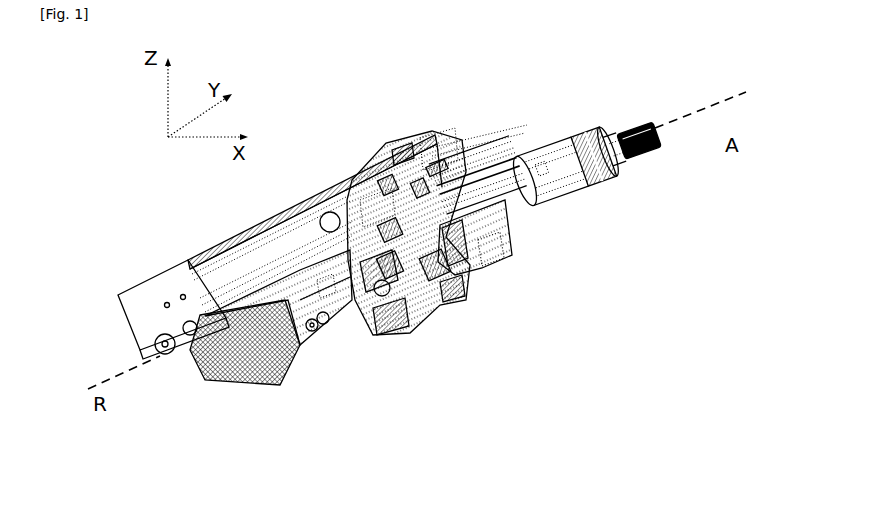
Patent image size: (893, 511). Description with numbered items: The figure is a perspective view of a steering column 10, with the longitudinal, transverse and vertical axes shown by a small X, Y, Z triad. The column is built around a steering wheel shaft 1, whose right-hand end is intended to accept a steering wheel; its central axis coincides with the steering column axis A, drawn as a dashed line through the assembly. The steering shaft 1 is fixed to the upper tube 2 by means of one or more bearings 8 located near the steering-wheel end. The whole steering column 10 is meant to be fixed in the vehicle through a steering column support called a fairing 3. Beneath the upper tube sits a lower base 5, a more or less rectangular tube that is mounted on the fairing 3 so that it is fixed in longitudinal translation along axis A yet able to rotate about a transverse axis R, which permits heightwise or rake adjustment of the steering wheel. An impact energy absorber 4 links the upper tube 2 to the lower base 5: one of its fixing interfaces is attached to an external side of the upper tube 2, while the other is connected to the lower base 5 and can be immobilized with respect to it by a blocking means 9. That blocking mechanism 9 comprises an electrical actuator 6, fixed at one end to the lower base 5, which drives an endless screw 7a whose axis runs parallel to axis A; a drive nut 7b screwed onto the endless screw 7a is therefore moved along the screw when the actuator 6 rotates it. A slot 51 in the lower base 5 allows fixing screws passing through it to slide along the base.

The steering wheel shaft 1 is at (635, 152).
The upper tube 2 is at (515, 218).
The fairing 3 is at (451, 147).
The impact energy absorber 4 is at (452, 247).
The lower base 5 is at (468, 272).
The electrical actuator 6 is at (273, 367).
The endless screw 7a is at (338, 310).
The drive nut 7b is at (373, 285).
The bearing 8 is at (583, 140).
The blocking means 9 is at (203, 390).
The steering column 10 is at (615, 345).
The slot 51 is at (346, 282).